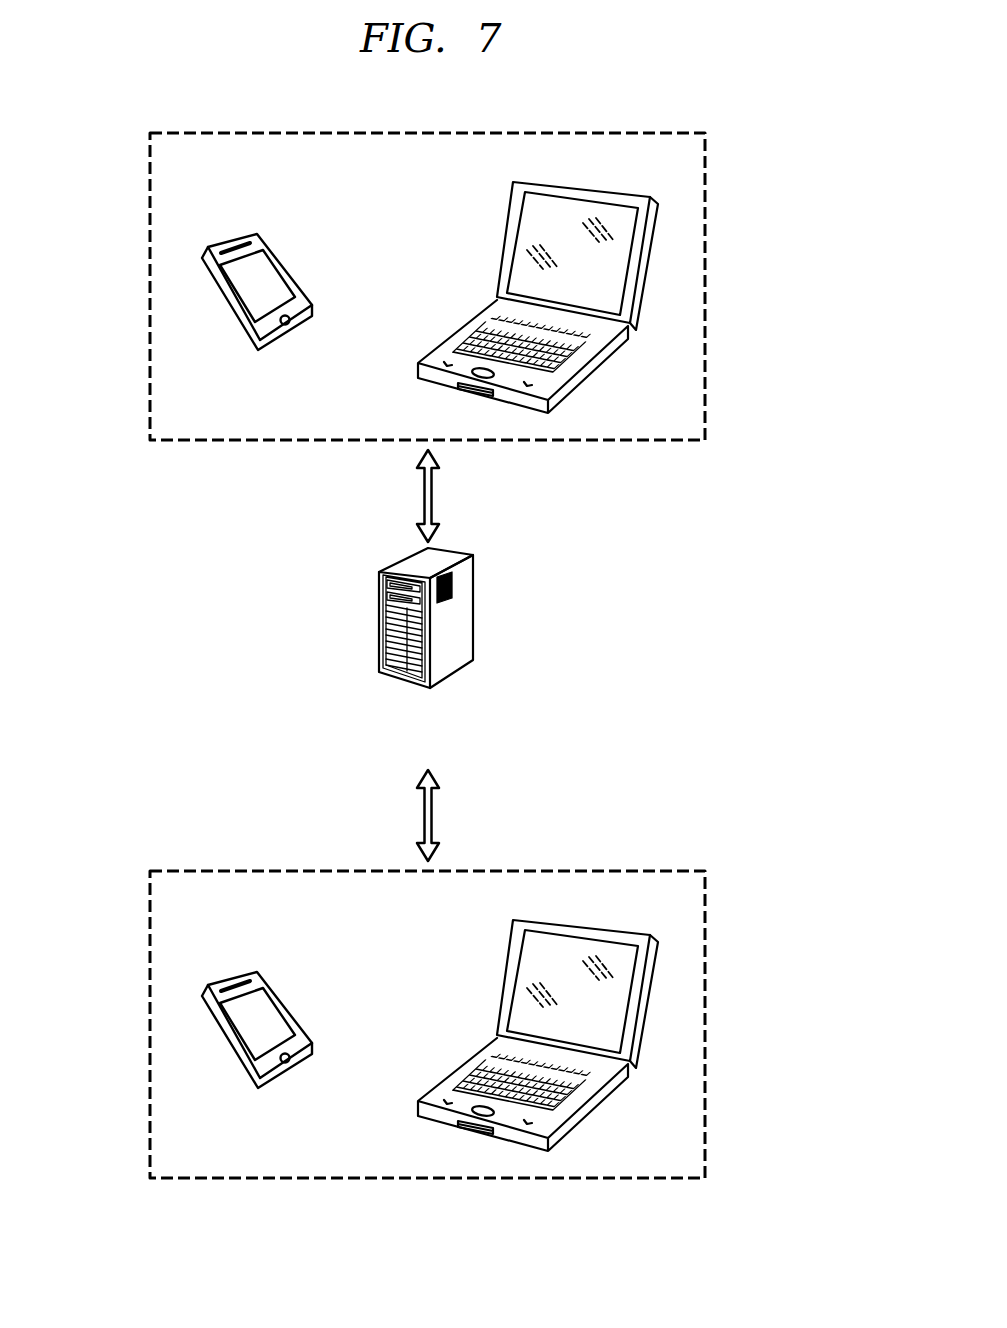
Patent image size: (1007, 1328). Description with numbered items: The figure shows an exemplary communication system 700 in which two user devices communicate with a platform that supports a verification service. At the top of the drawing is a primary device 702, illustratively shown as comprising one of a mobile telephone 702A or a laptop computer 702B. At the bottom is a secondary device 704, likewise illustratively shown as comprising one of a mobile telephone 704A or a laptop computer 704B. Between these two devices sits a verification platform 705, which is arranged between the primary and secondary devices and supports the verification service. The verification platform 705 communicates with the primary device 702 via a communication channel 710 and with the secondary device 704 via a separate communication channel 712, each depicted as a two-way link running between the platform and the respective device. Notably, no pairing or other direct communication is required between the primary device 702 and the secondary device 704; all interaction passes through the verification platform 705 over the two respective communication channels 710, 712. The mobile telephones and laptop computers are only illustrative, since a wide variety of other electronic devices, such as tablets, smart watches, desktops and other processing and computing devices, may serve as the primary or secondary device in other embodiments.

The communication system 700 is at (636, 107).
The primary device 702 is at (150, 148).
The mobile telephone 702A is at (275, 252).
The laptop computer 702B is at (598, 190).
The secondary device 704 is at (390, 1024).
The mobile telephone 704A is at (277, 1021).
The laptop computer 704B is at (544, 1021).
The verification platform 705 is at (474, 611).
The communication channel 710 is at (422, 491).
The communication channel 712 is at (422, 813).